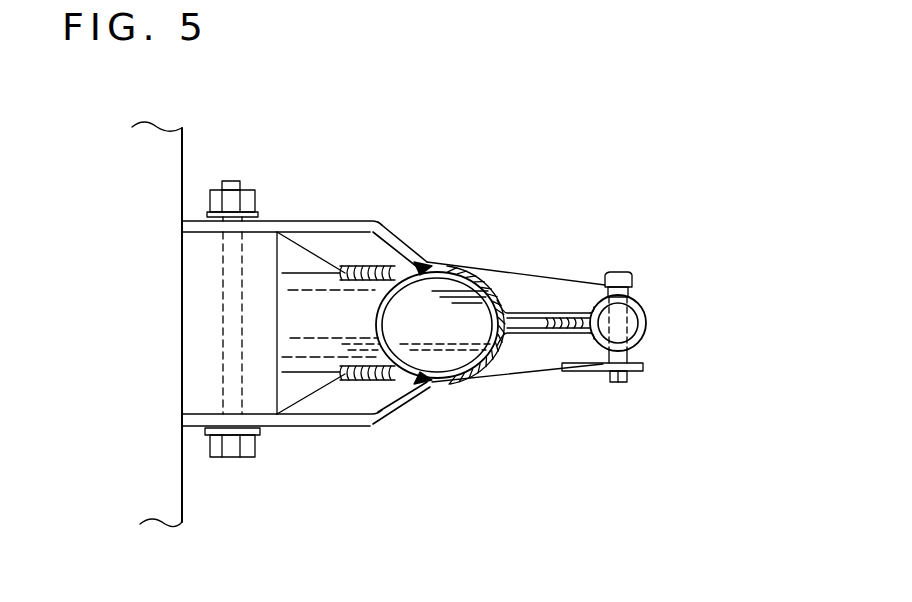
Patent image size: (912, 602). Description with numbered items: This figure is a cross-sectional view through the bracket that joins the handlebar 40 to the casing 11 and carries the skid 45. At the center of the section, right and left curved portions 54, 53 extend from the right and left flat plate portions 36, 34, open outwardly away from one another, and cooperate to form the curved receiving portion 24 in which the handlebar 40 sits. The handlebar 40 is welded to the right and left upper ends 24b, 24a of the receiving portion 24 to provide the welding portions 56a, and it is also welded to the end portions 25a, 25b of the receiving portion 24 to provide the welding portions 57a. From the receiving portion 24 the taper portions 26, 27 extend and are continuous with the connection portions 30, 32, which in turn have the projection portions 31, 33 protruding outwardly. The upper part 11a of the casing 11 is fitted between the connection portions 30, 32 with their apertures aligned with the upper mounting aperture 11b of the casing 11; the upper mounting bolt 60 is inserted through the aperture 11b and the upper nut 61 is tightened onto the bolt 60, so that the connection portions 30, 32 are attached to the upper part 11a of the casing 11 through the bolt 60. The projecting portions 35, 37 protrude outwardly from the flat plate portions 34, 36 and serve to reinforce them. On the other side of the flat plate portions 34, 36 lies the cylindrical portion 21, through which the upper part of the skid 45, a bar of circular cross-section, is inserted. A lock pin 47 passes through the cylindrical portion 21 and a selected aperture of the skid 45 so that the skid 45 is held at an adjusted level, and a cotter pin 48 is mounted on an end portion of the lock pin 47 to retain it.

The casing 11 is at (148, 367).
The upper part of the casing 11a is at (200, 258).
The upper mounting aperture 11b is at (222, 290).
The cylindrical portion 21 is at (643, 300).
The curved receiving portion 24 is at (474, 268).
The left upper end of the receiving portion 24a is at (462, 380).
The right upper end of the receiving portion 24b is at (445, 268).
The end portion of the receiving portion 25a is at (344, 424).
The end portion of the receiving portion 25b is at (357, 262).
The taper portion 26 is at (400, 405).
The taper portion 27 is at (401, 256).
The connection portion 30 is at (292, 428).
The projection portion 31 is at (268, 428).
The connection portion 32 is at (292, 236).
The projection portion 33 is at (265, 228).
The left flat plate portion 34 is at (582, 373).
The projecting portion 35 is at (538, 372).
The right flat plate portion 36 is at (562, 318).
The projecting portion 37 is at (545, 280).
The handlebar 40 is at (312, 296).
The skid 45 is at (648, 320).
The lock pin 47 is at (633, 278).
The cotter pin 48 is at (645, 370).
The left curved portion 53 is at (494, 355).
The right curved portion 54 is at (553, 313).
The welding portion 56a is at (468, 272).
The welding portion 57a is at (393, 262).
The upper mounting bolt 60 is at (208, 447).
The upper nut 61 is at (205, 197).